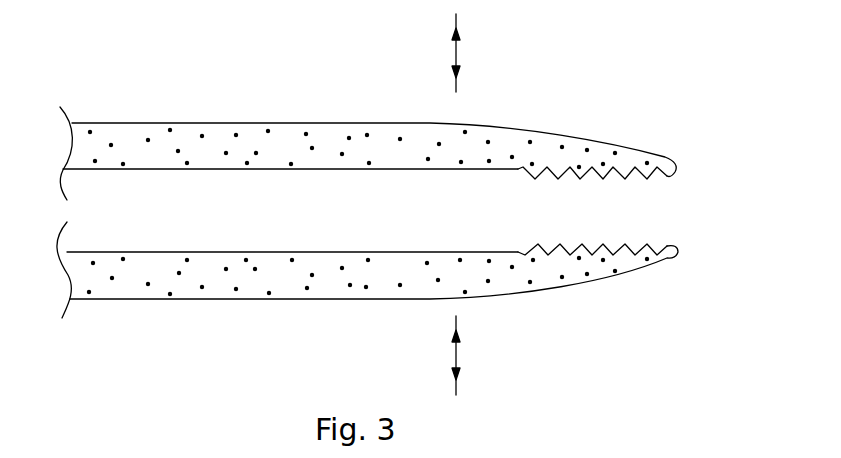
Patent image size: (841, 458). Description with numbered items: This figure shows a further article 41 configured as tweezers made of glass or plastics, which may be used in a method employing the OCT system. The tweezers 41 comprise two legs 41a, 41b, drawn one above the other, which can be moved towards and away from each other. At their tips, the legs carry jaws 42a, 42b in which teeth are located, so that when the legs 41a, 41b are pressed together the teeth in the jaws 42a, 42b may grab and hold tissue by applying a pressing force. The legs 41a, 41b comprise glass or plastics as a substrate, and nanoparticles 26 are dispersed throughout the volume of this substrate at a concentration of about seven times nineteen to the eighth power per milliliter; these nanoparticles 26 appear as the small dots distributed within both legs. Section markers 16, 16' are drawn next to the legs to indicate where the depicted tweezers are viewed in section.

The article 41 is at (192, 104).
The leg 41a is at (207, 170).
The leg 41b is at (218, 300).
The jaw 42a is at (513, 191).
The jaw 42b is at (513, 229).
The nanoparticles 26 is at (342, 153).
The section line 16 is at (483, 204).
The section line 16' is at (485, 177).